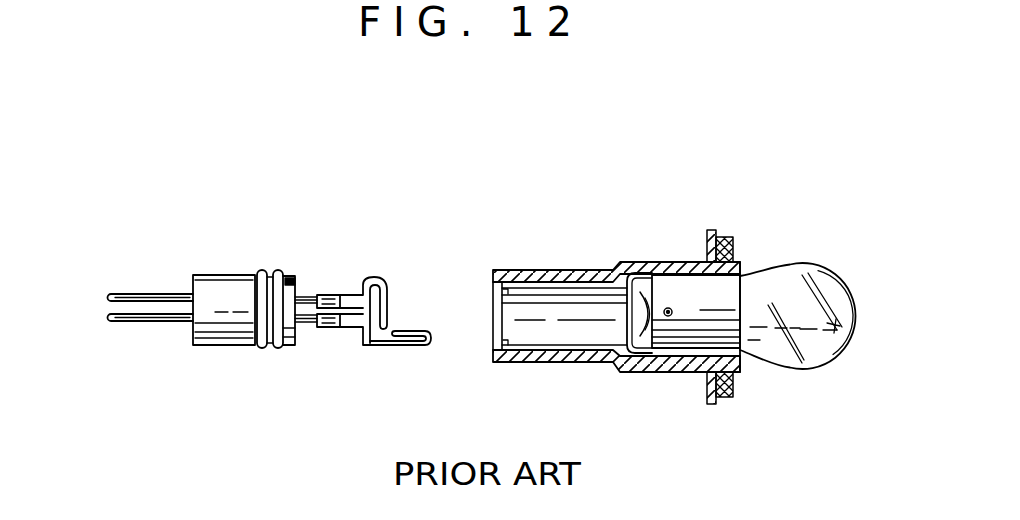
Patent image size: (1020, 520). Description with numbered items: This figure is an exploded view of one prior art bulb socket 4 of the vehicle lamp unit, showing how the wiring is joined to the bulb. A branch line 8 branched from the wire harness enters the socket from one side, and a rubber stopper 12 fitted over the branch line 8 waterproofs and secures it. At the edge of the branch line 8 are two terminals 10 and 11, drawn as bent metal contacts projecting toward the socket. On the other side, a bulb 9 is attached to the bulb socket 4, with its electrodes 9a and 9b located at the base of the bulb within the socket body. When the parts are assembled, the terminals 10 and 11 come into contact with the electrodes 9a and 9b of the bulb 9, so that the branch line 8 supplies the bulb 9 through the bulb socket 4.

The bulb socket 4 is at (466, 248).
The branch line 8 is at (153, 294).
The bulb 9 is at (808, 275).
The electrode 9a is at (627, 270).
The electrode 9b is at (677, 335).
The terminal 10 is at (385, 282).
The terminal 11 is at (380, 350).
The rubber stopper 12 is at (222, 330).